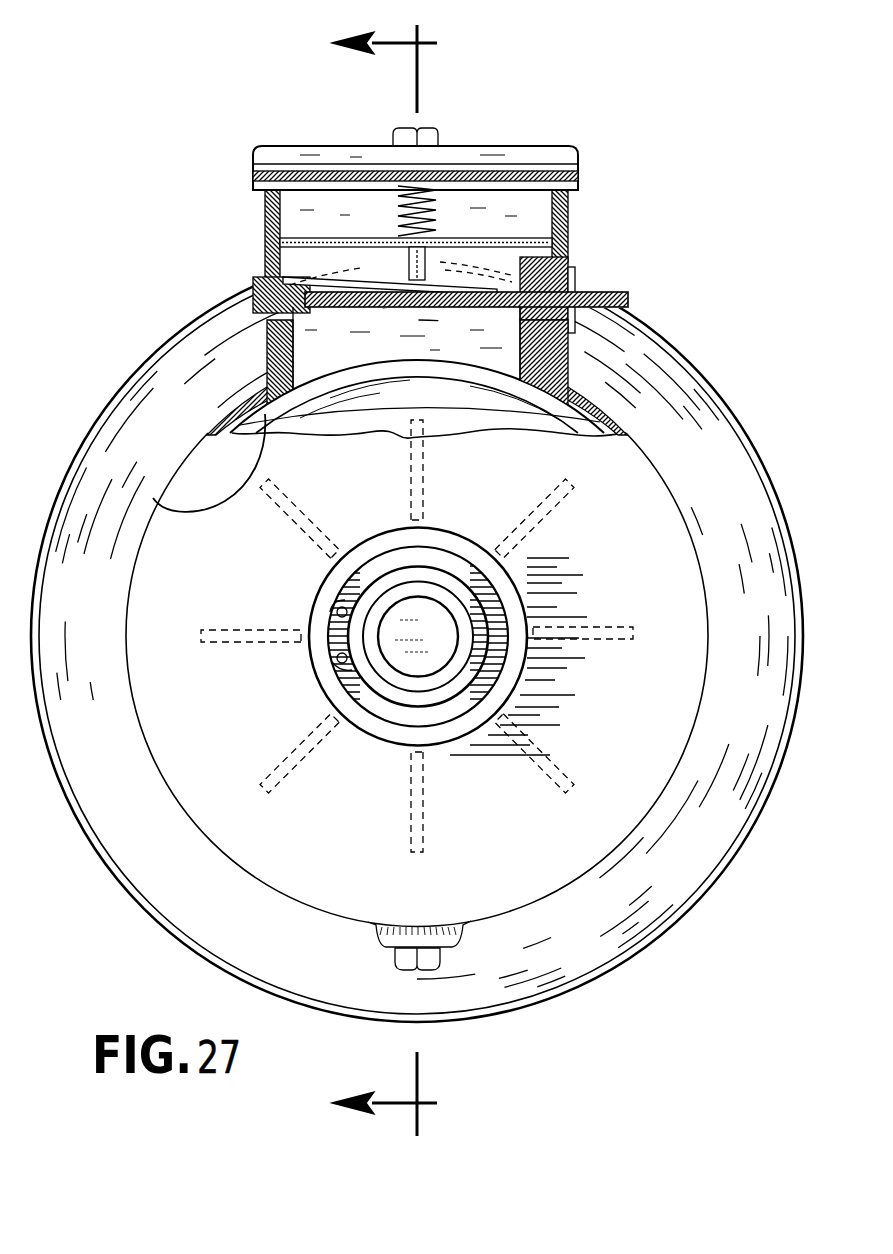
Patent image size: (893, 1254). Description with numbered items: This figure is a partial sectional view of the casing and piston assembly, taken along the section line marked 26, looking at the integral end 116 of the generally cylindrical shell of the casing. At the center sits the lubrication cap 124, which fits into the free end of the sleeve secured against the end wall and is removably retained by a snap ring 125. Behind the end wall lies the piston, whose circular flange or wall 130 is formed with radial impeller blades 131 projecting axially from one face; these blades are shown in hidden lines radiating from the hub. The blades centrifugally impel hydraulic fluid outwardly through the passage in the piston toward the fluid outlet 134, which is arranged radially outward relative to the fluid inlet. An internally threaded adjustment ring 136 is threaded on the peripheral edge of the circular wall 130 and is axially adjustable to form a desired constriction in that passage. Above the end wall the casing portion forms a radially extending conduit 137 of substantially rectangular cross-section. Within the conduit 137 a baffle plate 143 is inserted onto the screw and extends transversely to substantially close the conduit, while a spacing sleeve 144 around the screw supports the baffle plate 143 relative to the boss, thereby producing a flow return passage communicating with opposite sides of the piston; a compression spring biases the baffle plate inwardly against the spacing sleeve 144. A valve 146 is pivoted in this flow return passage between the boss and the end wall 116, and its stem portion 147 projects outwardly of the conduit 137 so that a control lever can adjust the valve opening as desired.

The section line 26- 26 is at (412, 579).
The integral end 116 is at (285, 832).
The lubrication cap 124 is at (343, 658).
The snap ring 125 is at (482, 573).
The circular flange or wall 130 is at (382, 422).
The radial impeller blades 131 is at (410, 488).
The fluid outlet 134 is at (156, 500).
The adjustment ring 136 is at (498, 405).
The conduit 137 is at (566, 252).
The baffle plate 143 is at (460, 172).
The spacing sleeve 144 is at (427, 240).
The valve 146 is at (328, 290).
The stem portion 147 is at (627, 300).